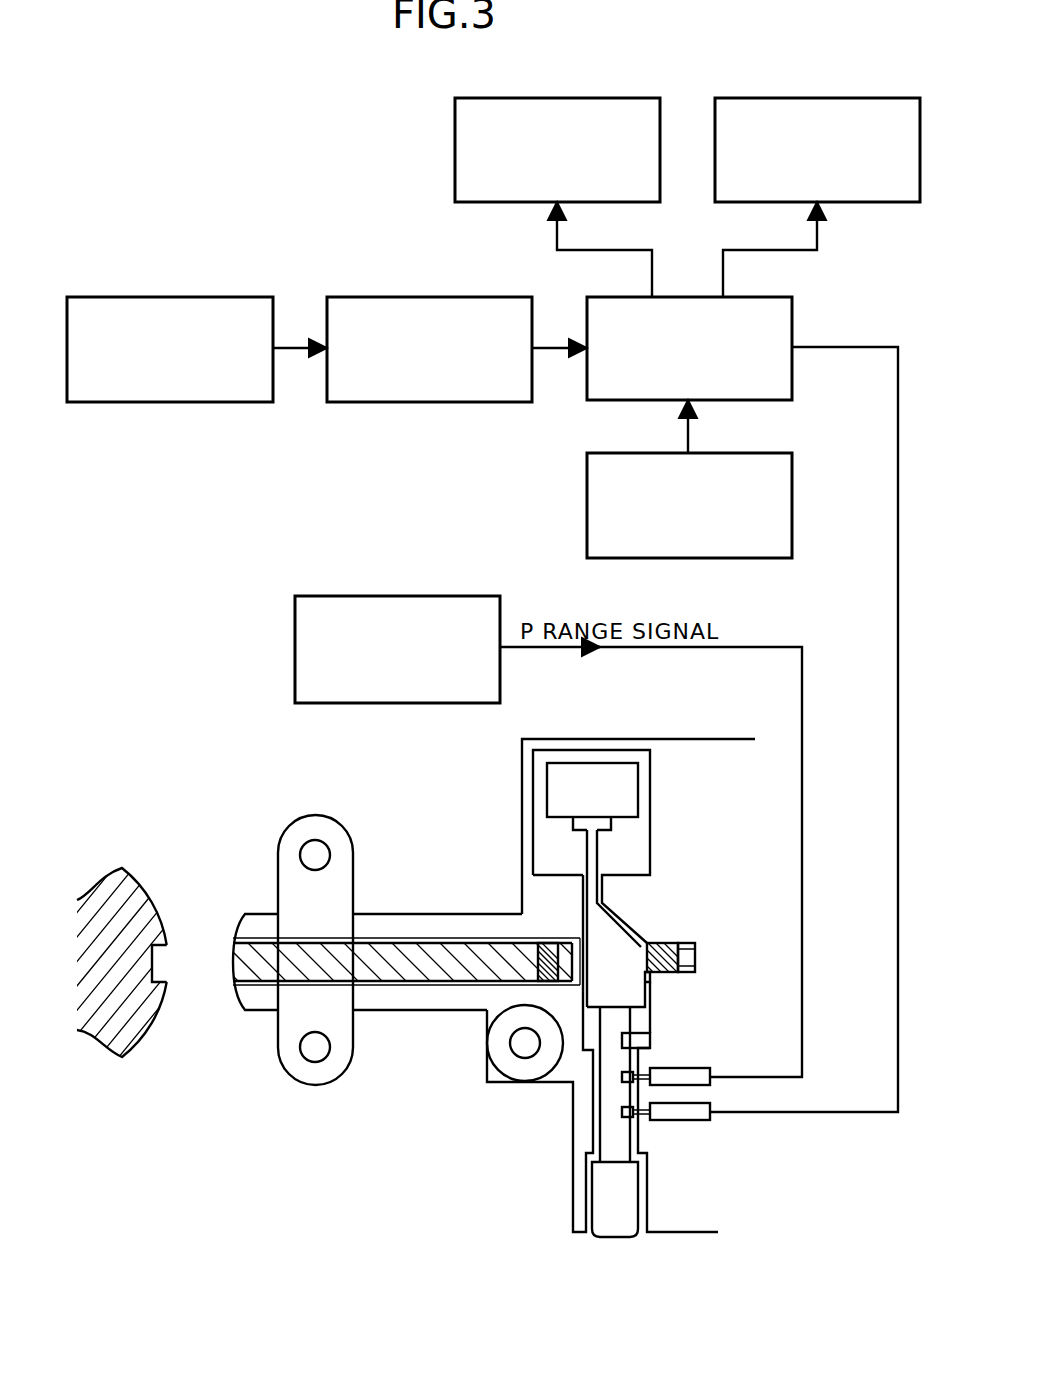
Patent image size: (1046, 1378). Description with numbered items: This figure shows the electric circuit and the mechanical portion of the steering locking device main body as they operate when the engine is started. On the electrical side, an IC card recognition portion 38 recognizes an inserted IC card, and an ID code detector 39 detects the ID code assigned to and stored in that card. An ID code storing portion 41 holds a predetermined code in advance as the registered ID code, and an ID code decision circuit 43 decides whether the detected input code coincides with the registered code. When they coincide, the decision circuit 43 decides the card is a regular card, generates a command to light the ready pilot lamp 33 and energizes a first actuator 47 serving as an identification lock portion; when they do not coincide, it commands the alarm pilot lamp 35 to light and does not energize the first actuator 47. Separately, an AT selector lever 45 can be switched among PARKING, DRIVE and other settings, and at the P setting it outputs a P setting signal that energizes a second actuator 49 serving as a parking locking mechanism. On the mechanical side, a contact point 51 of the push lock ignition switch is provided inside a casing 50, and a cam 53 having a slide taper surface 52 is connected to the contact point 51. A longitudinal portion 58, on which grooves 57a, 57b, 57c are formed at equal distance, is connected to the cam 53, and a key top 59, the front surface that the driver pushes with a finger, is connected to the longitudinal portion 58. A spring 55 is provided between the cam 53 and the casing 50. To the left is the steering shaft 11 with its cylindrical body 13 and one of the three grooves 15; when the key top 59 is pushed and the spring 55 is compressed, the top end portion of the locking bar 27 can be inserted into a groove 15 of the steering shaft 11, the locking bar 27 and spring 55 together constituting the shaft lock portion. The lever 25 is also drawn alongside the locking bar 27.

The steering shaft 11 is at (147, 872).
The cylindrical body 13 is at (162, 918).
The grooves 15 is at (163, 970).
The lever 25 is at (338, 815).
The locking bar 27 is at (412, 943).
The ready pilot lamp 33 is at (545, 98).
The alarm pilot lamp 35 is at (815, 98).
The IC card recognition portion 38 is at (176, 297).
The ID code detector 39 is at (413, 297).
The ID code storing portion 41 is at (792, 500).
The ID code decision circuit 43 is at (792, 310).
The AT selector lever 45 is at (398, 596).
The first actuator 47 is at (682, 1122).
The second actuator 49 is at (718, 1070).
The casing 50 is at (687, 943).
The contact point 51 is at (640, 783).
The slide taper surface 52 is at (612, 945).
The cam 53 is at (635, 997).
The spring 55 is at (657, 943).
The groove 57a is at (652, 1040).
The groove 57b is at (622, 1077).
The groove 57c is at (622, 1112).
The longitudinal portion 58 is at (610, 1140).
The key top 59 is at (612, 1240).